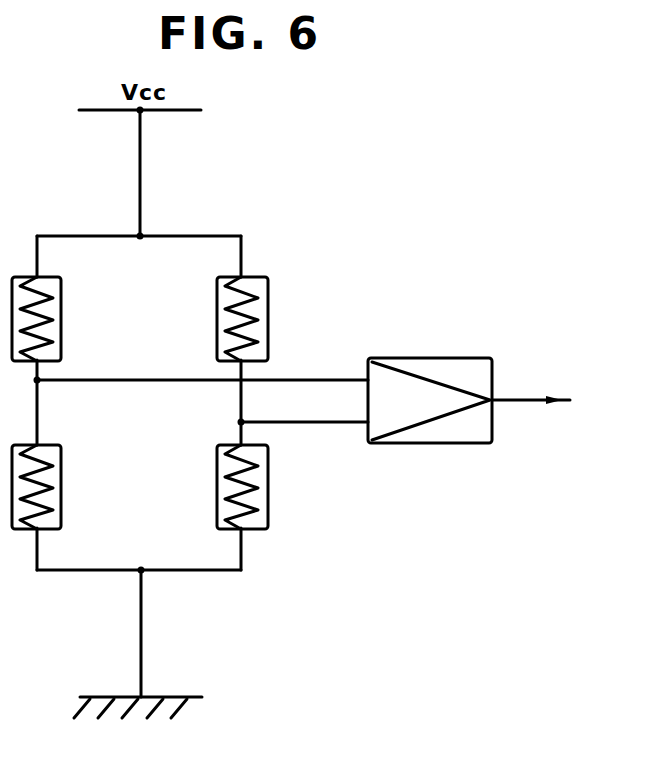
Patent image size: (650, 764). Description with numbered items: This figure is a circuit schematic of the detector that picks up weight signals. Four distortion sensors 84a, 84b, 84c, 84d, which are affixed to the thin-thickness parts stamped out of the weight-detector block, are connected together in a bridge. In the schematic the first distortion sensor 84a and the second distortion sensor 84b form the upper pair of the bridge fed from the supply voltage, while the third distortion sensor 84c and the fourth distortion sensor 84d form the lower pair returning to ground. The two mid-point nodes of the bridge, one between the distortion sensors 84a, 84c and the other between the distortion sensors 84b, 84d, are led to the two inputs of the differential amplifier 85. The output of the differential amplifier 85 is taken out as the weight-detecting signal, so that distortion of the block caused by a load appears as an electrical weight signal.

The distortion sensor 84a is at (61, 300).
The distortion sensor 84b is at (268, 292).
The distortion sensor 84c is at (61, 489).
The distortion sensor 84d is at (268, 489).
The differential amplifier 85 is at (480, 358).